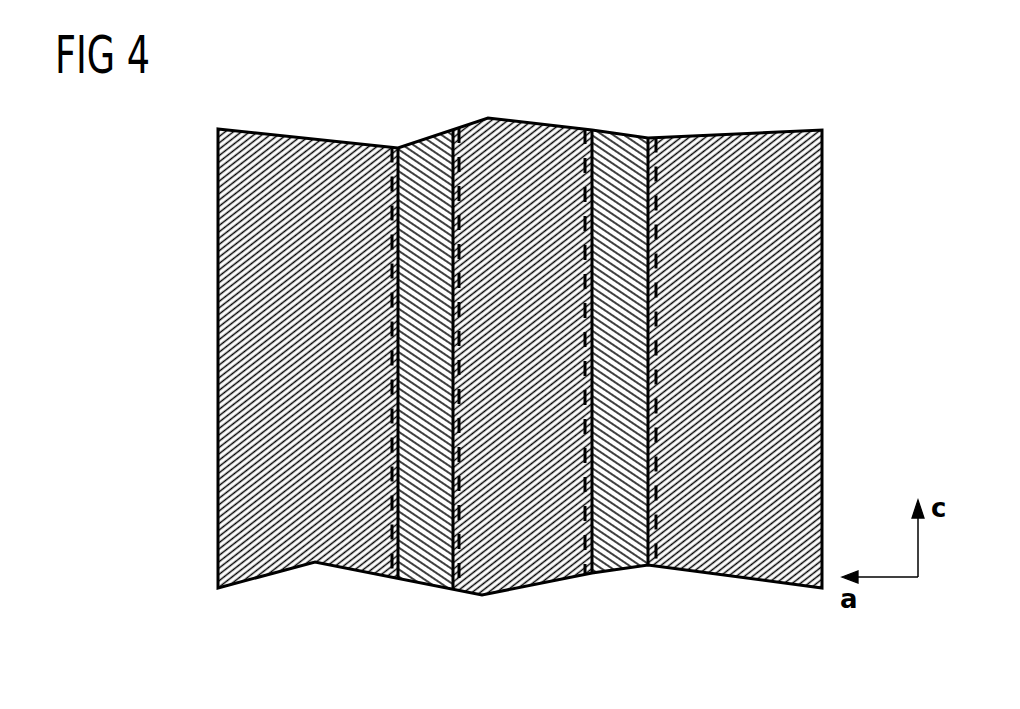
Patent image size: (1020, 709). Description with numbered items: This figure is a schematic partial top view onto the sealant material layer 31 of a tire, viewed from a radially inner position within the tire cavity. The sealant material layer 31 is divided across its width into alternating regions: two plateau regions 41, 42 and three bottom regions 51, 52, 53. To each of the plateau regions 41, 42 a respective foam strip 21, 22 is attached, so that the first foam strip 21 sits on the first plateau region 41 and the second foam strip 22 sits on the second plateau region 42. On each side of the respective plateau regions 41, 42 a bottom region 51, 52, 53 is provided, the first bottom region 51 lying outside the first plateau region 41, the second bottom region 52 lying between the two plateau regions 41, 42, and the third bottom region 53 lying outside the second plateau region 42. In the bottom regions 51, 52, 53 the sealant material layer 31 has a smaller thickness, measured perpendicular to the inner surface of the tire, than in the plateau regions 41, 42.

The sealant material layer 31 is at (203, 413).
The first bottom region 51 is at (316, 139).
The second bottom region 52 is at (558, 125).
The third bottom region 53 is at (722, 135).
The first foam strip 21 is at (430, 137).
The second foam strip 22 is at (622, 133).
The first plateau region 41 is at (394, 579).
The second plateau region 42 is at (648, 567).